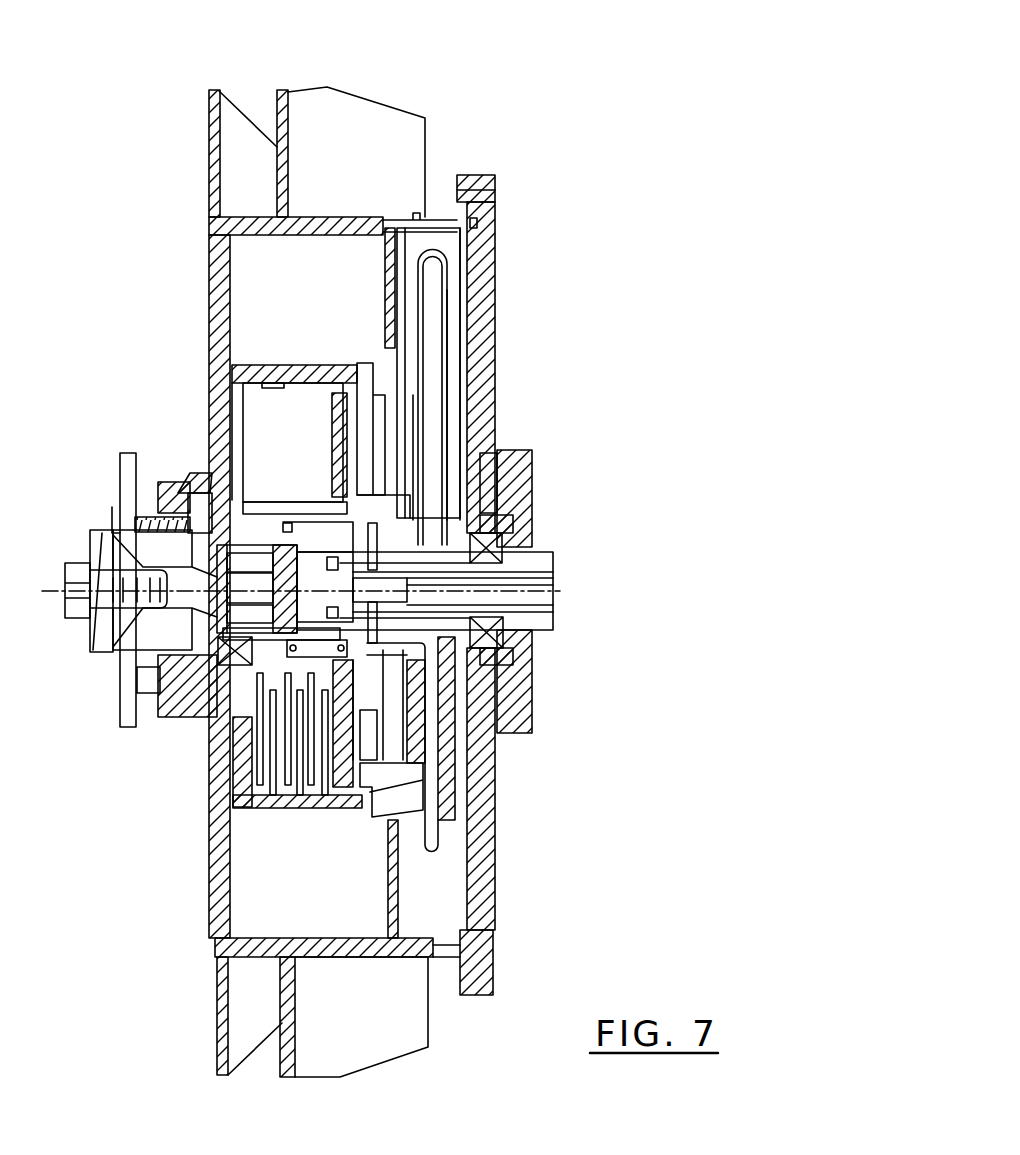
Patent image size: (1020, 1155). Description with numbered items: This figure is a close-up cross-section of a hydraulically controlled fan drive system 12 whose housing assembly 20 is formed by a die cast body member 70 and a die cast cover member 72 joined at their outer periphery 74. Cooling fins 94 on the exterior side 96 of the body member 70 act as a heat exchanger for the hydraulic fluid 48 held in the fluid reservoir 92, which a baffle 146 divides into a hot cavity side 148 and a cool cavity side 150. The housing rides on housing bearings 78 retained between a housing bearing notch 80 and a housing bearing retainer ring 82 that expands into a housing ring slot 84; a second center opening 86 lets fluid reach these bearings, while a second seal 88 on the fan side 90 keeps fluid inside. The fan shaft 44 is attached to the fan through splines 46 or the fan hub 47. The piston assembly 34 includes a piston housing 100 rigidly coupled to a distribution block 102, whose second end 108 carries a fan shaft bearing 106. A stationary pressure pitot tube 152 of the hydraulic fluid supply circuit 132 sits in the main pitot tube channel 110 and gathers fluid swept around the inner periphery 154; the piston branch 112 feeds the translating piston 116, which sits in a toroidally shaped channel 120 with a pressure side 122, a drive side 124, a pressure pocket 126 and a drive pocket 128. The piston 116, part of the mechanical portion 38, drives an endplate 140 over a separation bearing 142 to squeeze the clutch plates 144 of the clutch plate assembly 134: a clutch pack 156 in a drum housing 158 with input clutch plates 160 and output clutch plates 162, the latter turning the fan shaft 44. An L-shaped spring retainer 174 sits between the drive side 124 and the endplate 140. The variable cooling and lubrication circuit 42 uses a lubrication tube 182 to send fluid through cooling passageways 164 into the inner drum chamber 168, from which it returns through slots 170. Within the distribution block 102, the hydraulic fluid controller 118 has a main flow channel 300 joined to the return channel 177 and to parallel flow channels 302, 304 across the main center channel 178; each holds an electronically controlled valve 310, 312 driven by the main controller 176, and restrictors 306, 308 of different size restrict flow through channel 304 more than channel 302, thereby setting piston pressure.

The system 12 is at (652, 100).
The housing assembly 20 is at (482, 176).
The piston assembly 34 is at (388, 335).
The mechanical portion 38 is at (230, 385).
The variable cooling and lubrication circuit 42 is at (456, 690).
The fan shaft 44 is at (112, 667).
The splines 46 is at (86, 627).
The fan hub 47 is at (112, 490).
The hydraulic fluid 48 is at (485, 256).
The die cast body member 70 is at (212, 234).
The die cast cover member 72 is at (447, 290).
The outer periphery 74 is at (505, 194).
The housing bearings 78 is at (180, 485).
The housing bearing notch 80 is at (230, 660).
The housing bearing retainer ring 82 is at (186, 690).
The housing ring slot 84 is at (193, 697).
The second center opening 86 is at (155, 675).
The second seal 88 is at (127, 496).
The fan side 90 is at (124, 487).
The fluid reservoir 92 is at (236, 302).
The cooling fins 94 is at (283, 92).
The exterior side 96 is at (432, 218).
The piston housing 100 is at (447, 378).
The distribution block 102 is at (283, 562).
The fan shaft bearing 106 is at (203, 543).
The second end 108 is at (210, 565).
The main pitot tube channel 110 is at (443, 385).
The piston branch 112 is at (350, 462).
The translating piston 116 is at (352, 372).
The hydraulic fluid controller 118 is at (557, 553).
The toroidally shaped channel 120 is at (460, 390).
The pressure side 122 is at (513, 398).
The drive side 124 is at (348, 440).
The pressure pocket 126 is at (493, 393).
The drive pocket 128 is at (345, 488).
The hydraulic fluid supply circuit 132 is at (477, 264).
The clutch plate assembly 134 is at (226, 428).
The endplate 140 is at (337, 376).
The separation bearing 142 is at (345, 405).
The clutch plates 144 is at (233, 803).
The baffle 146 is at (386, 262).
The hot cavity side 148 is at (248, 263).
The cool cavity side 150 is at (470, 278).
The pressure pitot tube 152 is at (472, 293).
The inner periphery 154 is at (256, 923).
The clutch pack 156 is at (233, 763).
The drum housing 158 is at (235, 750).
The input clutch plates 160 is at (292, 771).
The output clutch plates 162 is at (200, 703).
The cooling passageways 164 is at (312, 476).
The inner drum chamber 168 is at (246, 453).
The slots 170 is at (271, 380).
The spring retainer 174 is at (378, 521).
The main controller 176 is at (334, 536).
The return channel 177 is at (455, 510).
The main center channel 178 is at (257, 589).
The lubrication tube 182 is at (443, 832).
The main flow channel 300 is at (432, 578).
The flow channel 302 is at (353, 578).
The flow channel 304 is at (355, 599).
The restrictor 306 is at (425, 591).
The restrictor 308 is at (400, 598).
The electronically controlled valve 310 is at (555, 570).
The electronically controlled valve 312 is at (503, 645).